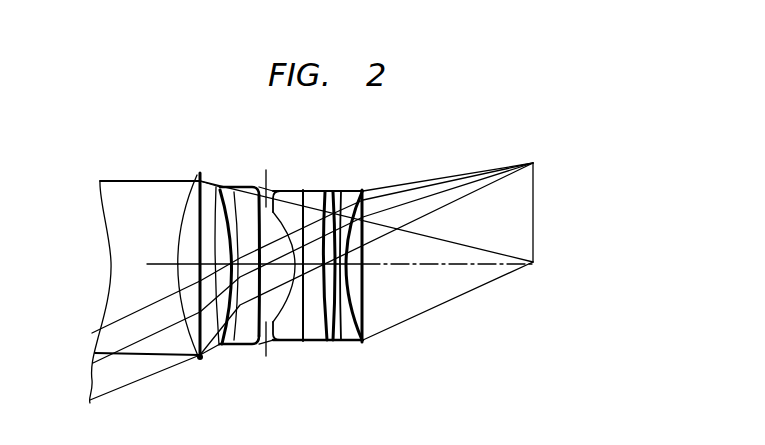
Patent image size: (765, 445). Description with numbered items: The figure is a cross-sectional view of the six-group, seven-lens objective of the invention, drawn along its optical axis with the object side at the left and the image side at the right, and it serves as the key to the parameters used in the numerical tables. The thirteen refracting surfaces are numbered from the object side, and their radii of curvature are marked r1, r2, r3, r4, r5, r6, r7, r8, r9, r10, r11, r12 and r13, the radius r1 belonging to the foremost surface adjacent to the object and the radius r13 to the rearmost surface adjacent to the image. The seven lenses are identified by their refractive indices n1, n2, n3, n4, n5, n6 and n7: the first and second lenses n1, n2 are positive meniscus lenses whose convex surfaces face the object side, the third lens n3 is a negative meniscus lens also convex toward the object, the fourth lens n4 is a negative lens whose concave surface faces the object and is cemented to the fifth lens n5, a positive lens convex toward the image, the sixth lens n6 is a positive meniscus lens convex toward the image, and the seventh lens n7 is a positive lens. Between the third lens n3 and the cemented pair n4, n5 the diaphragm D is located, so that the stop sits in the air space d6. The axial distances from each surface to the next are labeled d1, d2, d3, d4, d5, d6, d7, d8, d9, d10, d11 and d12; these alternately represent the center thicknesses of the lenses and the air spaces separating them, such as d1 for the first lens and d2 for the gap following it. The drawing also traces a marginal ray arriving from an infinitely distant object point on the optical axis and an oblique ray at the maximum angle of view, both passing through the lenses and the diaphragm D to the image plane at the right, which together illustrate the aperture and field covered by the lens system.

The radius of curvature of the first surface r1 is at (182, 190).
The radius of curvature of the second surface r2 is at (200, 177).
The radius of curvature of the third surface r3 is at (217, 185).
The radius of curvature of the fourth surface r4 is at (232, 186).
The radius of curvature of the fifth surface r5 is at (247, 187).
The radius of curvature of the sixth surface r6 is at (264, 186).
The radius of curvature of the seventh surface r7 is at (278, 190).
The radius of curvature of the eighth surface r8 is at (303, 190).
The radius of curvature of the ninth surface r9 is at (324, 190).
The radius of curvature of the tenth surface r10 is at (333, 190).
The radius of curvature of the eleventh surface r11 is at (342, 189).
The radius of curvature of the twelfth surface r12 is at (360, 189).
The radius of curvature of the thirteenth surface r13 is at (365, 220).
The refractive index of the first lens n1 is at (169, 240).
The refractive index of the second lens n2 is at (194, 232).
The refractive index of the third lens n3 is at (259, 257).
The refractive index of the fourth lens n4 is at (285, 271).
The refractive index of the fifth lens n5 is at (355, 257).
The refractive index of the sixth lens n6 is at (388, 257).
The refractive index of the seventh lens n7 is at (405, 257).
The distance between the first and second surfaces d1 is at (185, 262).
The distance between the second and third surfaces d2 is at (206, 273).
The distance between the third and fourth surfaces d3 is at (221, 298).
The distance between the fourth and fifth surfaces d4 is at (230, 320).
The distance between the fifth and sixth surfaces d5 is at (239, 344).
The distance between the sixth and seventh surfaces d6 is at (250, 350).
The distance between the seventh and eighth surfaces d7 is at (290, 342).
The distance between the eighth and ninth surfaces d8 is at (317, 341).
The distance between the ninth and tenth surfaces d9 is at (338, 341).
The distance between the tenth and eleventh surfaces d10 is at (345, 341).
The distance between the eleventh and twelfth surfaces d11 is at (352, 288).
The distance between the twelfth and thirteenth surfaces d12 is at (360, 300).
The diaphragm D is at (266, 350).